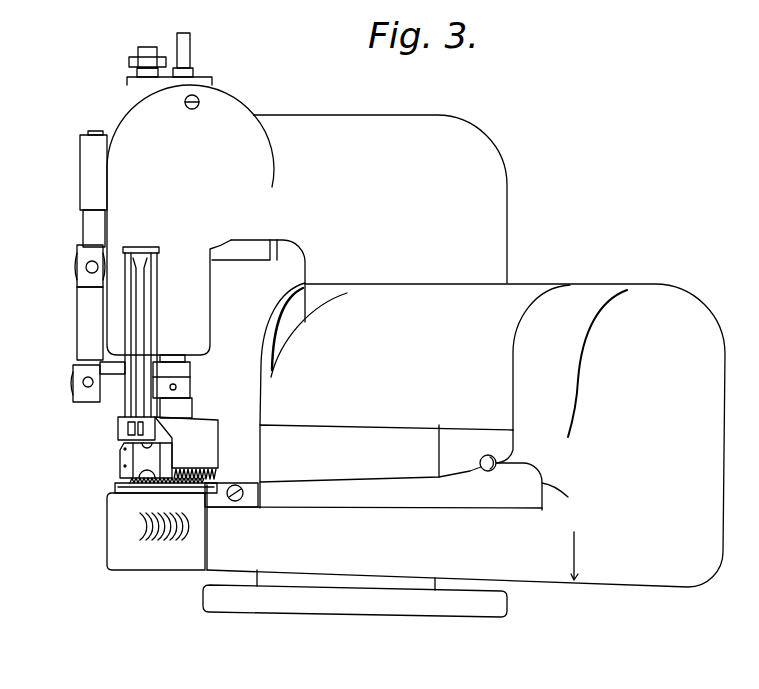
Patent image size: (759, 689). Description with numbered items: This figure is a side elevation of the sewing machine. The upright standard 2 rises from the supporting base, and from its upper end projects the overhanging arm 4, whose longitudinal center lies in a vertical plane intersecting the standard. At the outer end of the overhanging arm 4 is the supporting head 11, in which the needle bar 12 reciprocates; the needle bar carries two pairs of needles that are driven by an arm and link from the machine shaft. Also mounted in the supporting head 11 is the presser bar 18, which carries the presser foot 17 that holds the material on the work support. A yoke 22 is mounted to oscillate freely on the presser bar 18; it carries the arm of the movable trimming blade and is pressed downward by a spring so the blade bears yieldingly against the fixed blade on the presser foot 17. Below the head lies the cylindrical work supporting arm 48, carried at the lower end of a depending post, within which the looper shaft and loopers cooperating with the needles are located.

The standard 2 is at (507, 273).
The overhanging arm 4 is at (347, 125).
The supporting head 11 is at (272, 187).
The needle bar 12 is at (189, 53).
The presser foot 17 is at (137, 465).
The presser bar 18 is at (148, 53).
The yoke 22 is at (122, 405).
The work supporting arm 48 is at (374, 527).